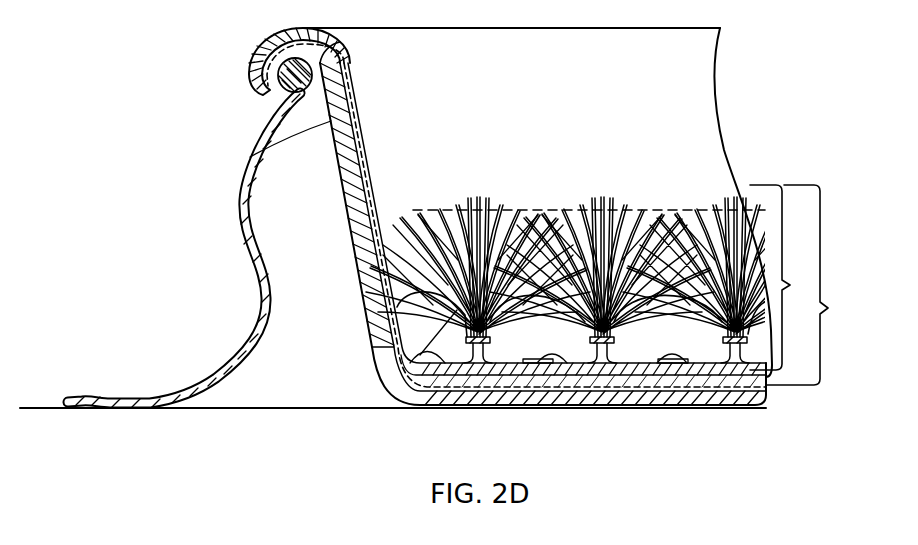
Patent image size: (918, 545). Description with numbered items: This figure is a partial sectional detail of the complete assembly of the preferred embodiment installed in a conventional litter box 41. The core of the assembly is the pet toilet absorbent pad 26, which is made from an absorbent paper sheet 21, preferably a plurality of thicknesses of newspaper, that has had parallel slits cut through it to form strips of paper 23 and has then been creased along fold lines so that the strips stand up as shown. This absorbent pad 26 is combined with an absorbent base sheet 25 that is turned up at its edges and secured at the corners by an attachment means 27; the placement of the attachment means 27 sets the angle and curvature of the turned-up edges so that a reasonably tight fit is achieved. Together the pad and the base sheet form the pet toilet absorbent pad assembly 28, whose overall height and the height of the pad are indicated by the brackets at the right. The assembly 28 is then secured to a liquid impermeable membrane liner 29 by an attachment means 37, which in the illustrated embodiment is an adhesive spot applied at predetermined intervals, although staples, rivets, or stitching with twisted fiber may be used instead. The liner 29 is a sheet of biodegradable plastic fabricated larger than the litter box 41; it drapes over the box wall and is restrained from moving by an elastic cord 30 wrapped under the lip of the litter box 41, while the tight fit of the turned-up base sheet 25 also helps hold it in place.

The absorbent paper sheet 21 is at (380, 360).
The strips of paper 23 is at (718, 197).
The absorbent base sheet 25 is at (752, 404).
The pet toilet absorbent pad 26 is at (785, 277).
The attachment means 27 is at (413, 210).
The pet toilet absorbent pad assembly 28 is at (813, 285).
The liquid impermeable membrane liner 29 is at (258, 282).
The elastic cord 30 is at (282, 91).
The attachment means 37 is at (356, 268).
The litter box 41 is at (250, 157).